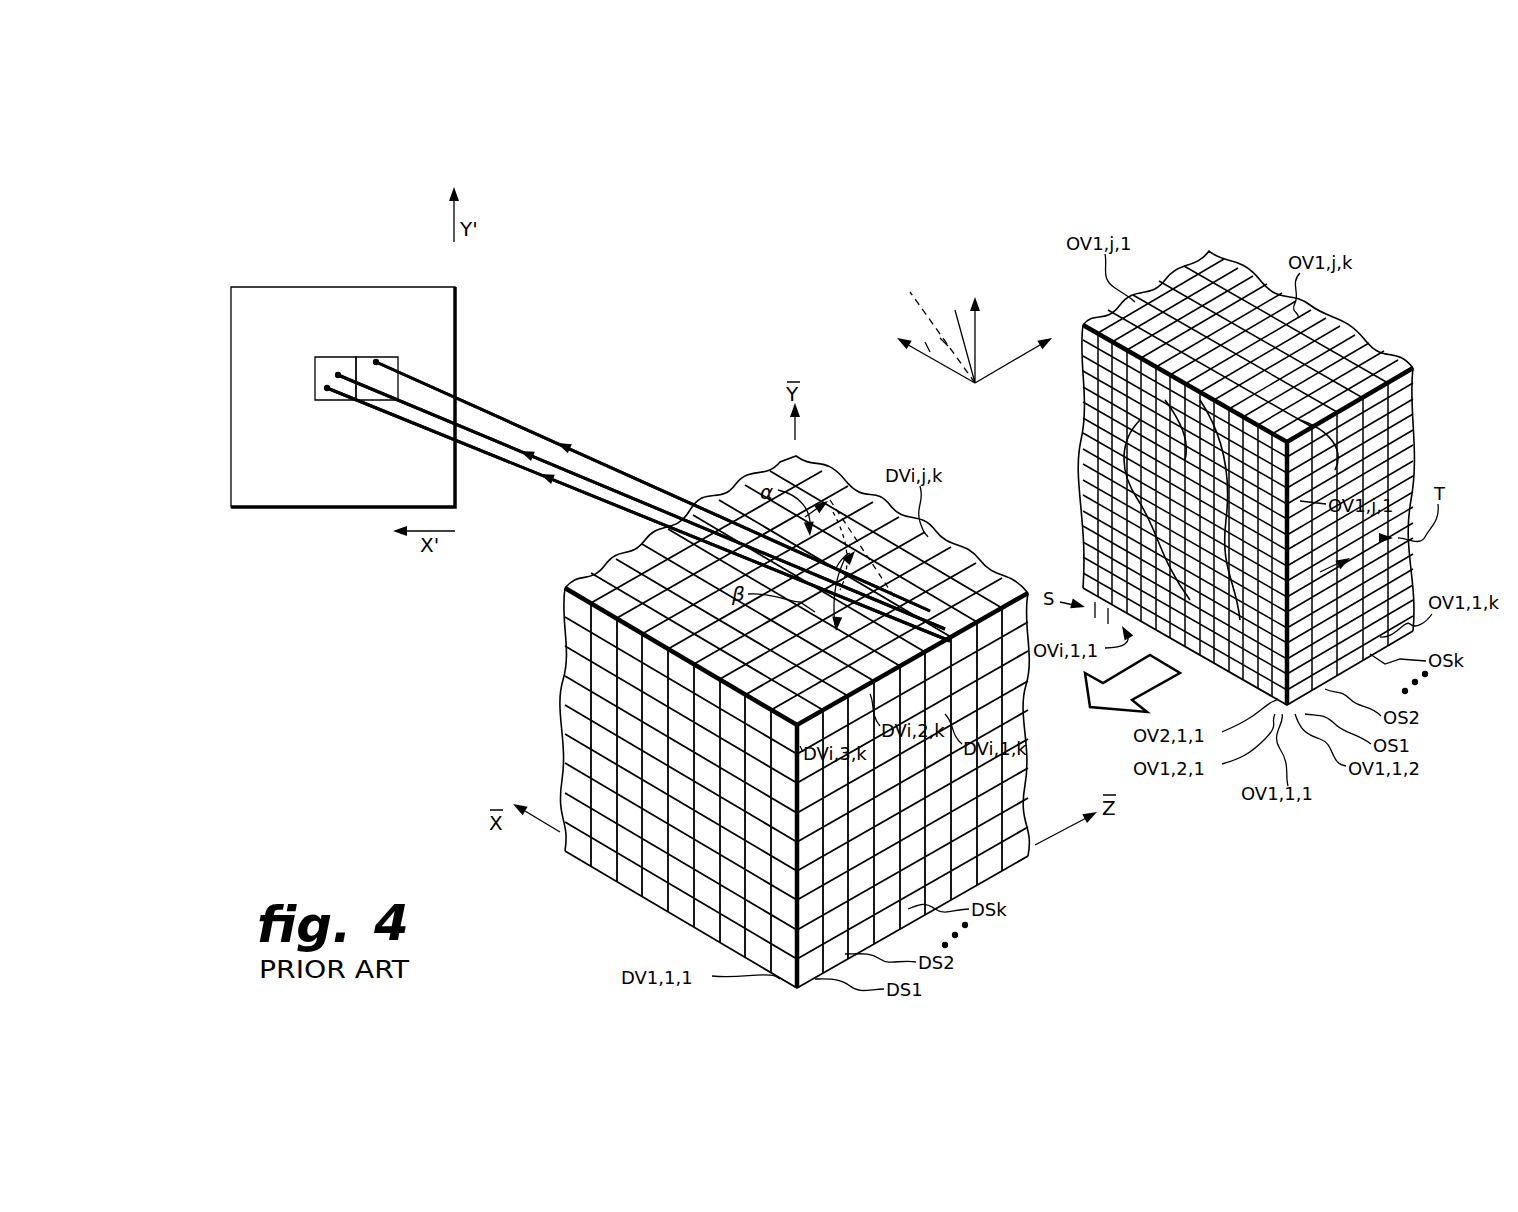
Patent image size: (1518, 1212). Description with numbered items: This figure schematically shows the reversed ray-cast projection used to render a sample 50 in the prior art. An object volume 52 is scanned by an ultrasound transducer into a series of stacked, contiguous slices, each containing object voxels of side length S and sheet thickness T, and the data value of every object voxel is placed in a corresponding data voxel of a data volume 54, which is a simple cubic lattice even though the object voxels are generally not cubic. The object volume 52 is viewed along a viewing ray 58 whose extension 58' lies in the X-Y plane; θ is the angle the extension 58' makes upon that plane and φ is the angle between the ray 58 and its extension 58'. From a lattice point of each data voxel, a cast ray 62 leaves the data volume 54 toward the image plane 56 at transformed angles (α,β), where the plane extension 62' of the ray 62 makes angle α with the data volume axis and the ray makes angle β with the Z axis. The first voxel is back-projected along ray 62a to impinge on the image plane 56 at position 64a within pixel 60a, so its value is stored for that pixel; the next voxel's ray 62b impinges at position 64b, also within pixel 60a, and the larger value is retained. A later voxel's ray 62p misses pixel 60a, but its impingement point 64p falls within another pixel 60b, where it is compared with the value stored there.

The sample 50 is at (1143, 688).
The object volume 52 is at (1072, 426).
The data volume 54 is at (945, 573).
The image plane 56 is at (255, 287).
The viewing ray 58 is at (974, 314).
The extension of viewing ray 58' is at (920, 322).
The image plane pixel 60a is at (318, 357).
The image plane pixel 60b is at (360, 357).
The cast ray 62 is at (638, 499).
The ray 62a is at (606, 501).
The ray 62b is at (597, 483).
The ray 62p is at (578, 452).
The plane extension of projected ray 62' is at (862, 519).
The impingement position 64a is at (327, 388).
The impingement position 64b is at (338, 375).
The impingement point 64p is at (376, 362).